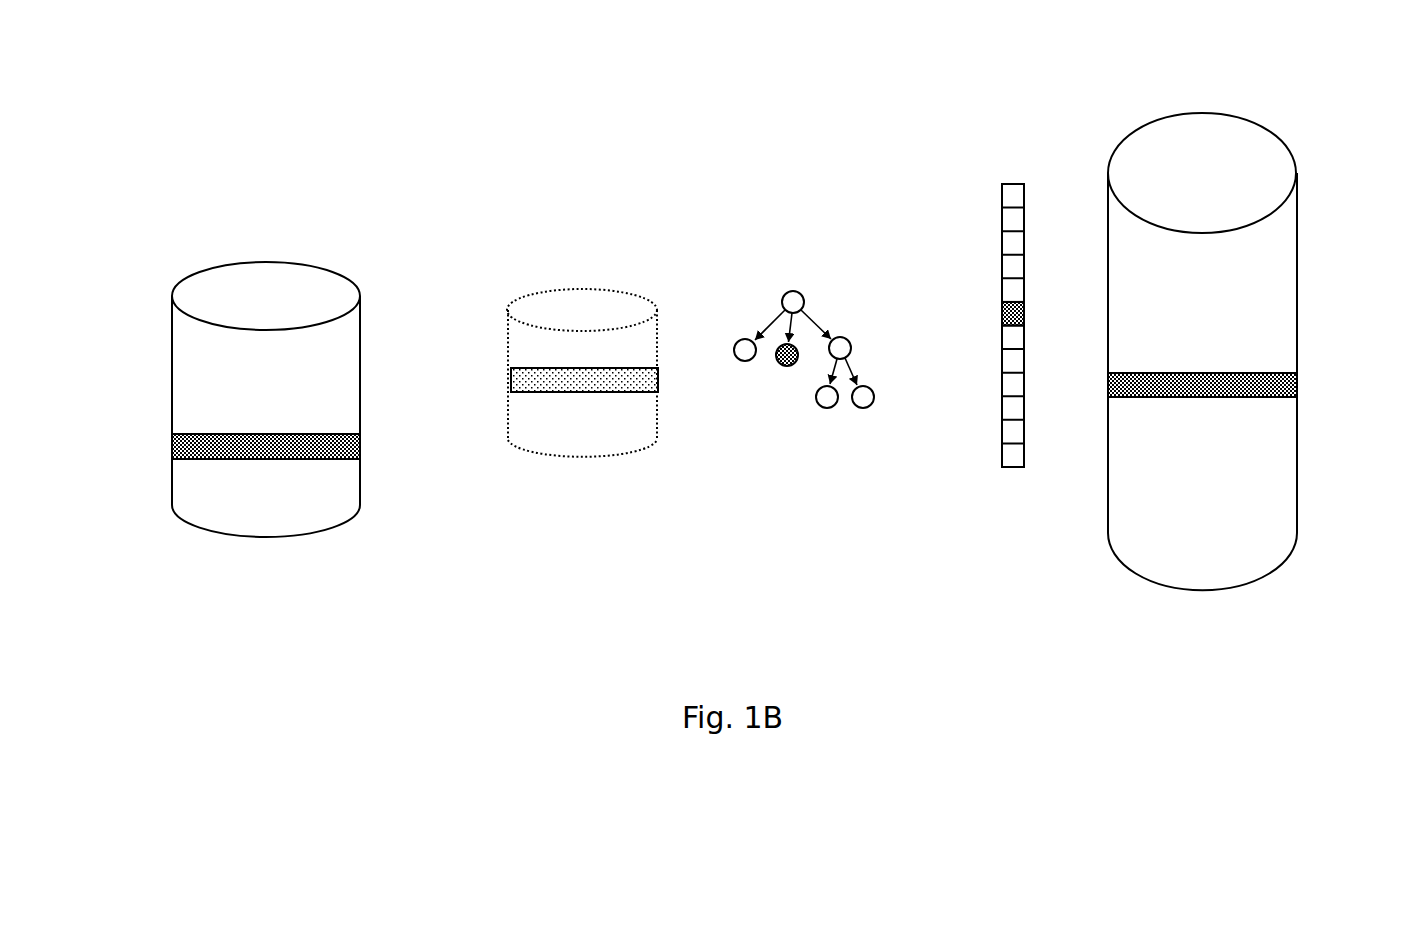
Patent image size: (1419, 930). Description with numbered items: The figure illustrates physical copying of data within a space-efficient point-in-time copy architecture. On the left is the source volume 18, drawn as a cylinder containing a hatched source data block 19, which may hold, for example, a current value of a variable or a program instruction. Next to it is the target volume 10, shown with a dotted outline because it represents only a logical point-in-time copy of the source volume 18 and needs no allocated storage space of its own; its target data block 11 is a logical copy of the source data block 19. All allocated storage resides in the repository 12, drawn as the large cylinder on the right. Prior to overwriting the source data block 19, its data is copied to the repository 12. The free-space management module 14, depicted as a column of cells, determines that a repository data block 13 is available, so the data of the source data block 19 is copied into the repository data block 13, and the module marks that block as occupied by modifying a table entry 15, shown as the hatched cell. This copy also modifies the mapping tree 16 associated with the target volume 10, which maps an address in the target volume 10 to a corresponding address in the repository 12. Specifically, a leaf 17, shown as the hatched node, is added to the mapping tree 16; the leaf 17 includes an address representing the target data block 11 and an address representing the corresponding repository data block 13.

The target volume 10 is at (542, 290).
The target data block 11 is at (512, 375).
The repository 12 is at (1297, 280).
The repository data block 13 is at (1200, 397).
The free-space management module 14 is at (1008, 244).
The table entry 15 is at (999, 322).
The mapping tree 16 is at (801, 312).
The leaf 17 is at (778, 363).
The source volume 18 is at (262, 260).
The source data block 19 is at (297, 459).